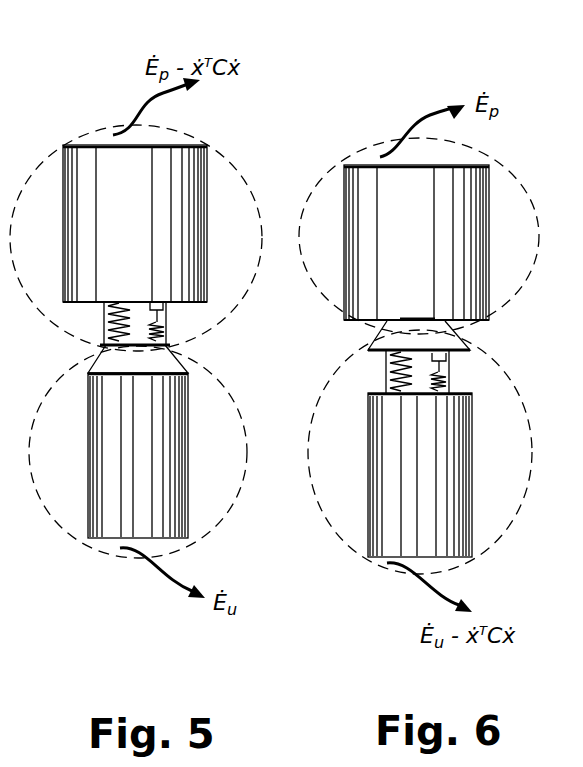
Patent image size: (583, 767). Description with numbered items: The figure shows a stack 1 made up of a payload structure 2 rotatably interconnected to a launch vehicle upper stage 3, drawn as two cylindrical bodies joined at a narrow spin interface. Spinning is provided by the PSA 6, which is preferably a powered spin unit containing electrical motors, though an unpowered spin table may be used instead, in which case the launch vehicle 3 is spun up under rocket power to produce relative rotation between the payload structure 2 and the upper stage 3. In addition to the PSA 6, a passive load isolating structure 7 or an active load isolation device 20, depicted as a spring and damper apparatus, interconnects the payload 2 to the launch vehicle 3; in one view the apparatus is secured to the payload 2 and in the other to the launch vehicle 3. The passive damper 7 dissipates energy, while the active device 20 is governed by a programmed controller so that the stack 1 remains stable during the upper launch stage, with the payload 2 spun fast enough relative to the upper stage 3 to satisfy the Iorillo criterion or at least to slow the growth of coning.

In FIG. 5, the stack 1 is at (240, 120).
In FIG. 6, the stack 1 is at (511, 120).
In FIG. 5, the payload structure 2 is at (207, 193).
In FIG. 6, the payload structure 2 is at (490, 220).
In FIG. 5, the launch vehicle upper stage 3 is at (88, 490).
In FIG. 6, the launch vehicle upper stage 3 is at (368, 492).
In FIG. 5, the PSA 6 is at (101, 366).
In FIG. 6, the PSA 6 is at (460, 325).
In FIG. 5, the passive load isolating structure 7 is at (188, 325).
In FIG. 6, the passive load isolating structure 7 is at (371, 368).
In FIG. 5, the active load isolation device 20 is at (166, 318).
In FIG. 6, the active load isolation device 20 is at (386, 380).